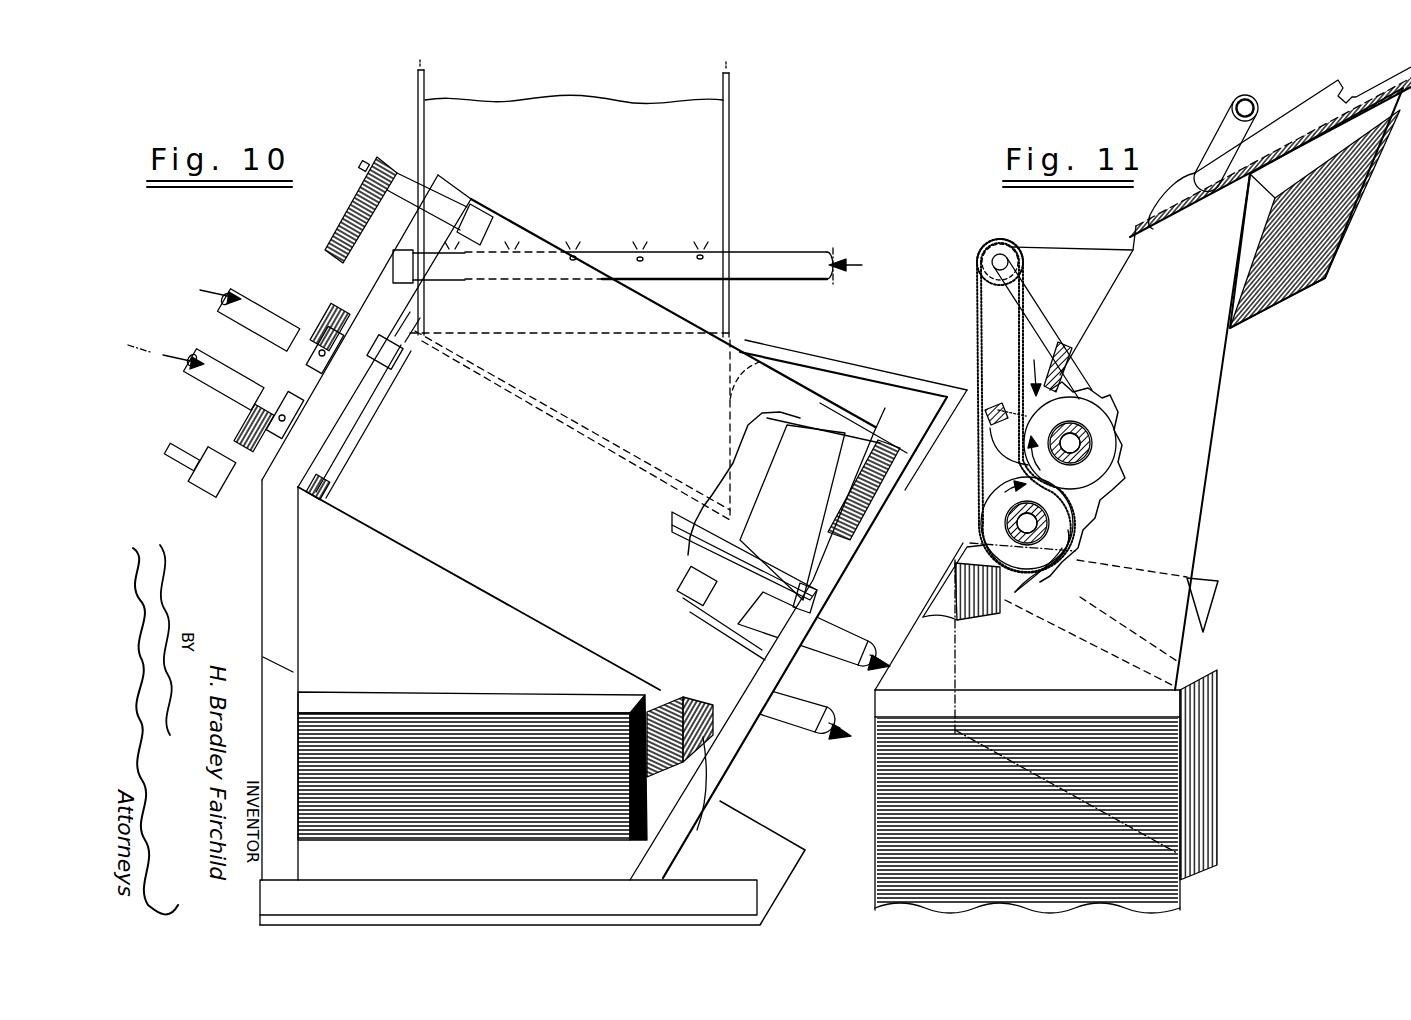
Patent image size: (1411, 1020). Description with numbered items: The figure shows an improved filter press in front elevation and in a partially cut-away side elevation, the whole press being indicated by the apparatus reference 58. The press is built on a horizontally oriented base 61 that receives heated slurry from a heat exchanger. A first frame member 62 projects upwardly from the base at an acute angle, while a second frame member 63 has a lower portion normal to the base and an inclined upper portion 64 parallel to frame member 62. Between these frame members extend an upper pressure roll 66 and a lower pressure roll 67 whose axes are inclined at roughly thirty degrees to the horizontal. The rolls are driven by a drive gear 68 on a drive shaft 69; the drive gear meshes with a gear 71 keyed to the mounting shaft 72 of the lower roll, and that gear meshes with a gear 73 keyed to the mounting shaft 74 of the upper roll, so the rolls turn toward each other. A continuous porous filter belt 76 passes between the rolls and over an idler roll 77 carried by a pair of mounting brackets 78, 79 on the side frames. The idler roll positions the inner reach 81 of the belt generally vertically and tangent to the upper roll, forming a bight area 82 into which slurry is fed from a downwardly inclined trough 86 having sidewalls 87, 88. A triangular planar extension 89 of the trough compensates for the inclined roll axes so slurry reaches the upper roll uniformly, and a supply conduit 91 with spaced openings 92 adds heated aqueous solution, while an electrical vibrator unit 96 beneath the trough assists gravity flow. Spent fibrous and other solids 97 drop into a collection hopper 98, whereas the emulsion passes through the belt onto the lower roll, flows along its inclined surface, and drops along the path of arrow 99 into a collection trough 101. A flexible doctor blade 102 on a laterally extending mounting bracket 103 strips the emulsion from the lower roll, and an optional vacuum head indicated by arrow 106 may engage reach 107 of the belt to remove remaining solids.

In FIG. 10, the sheet feeding apparatus 58 is at (258, 234).
In FIG. 11, the sheet feeding apparatus 58 is at (1240, 404).
In FIG. 10, the base 61 is at (488, 898).
In FIG. 11, the base 61 is at (900, 790).
In FIG. 10, the first frame member 62 is at (727, 758).
In FIG. 11, the first frame member 62 is at (1184, 309).
In FIG. 10, the second frame member 63 is at (292, 633).
In FIG. 10, the inclined upper portion 64 is at (362, 300).
In FIG. 10, the upper pressure roll 66 is at (376, 388).
In FIG. 11, the upper pressure roll 66 is at (1096, 406).
In FIG. 10, the lower pressure roll 67 is at (313, 497).
In FIG. 11, the lower pressure roll 67 is at (1066, 520).
In FIG. 10, the drive gear 68 is at (205, 505).
In FIG. 10, the drive shaft 69 is at (180, 466).
In FIG. 10, the gear 71 is at (232, 438).
In FIG. 10, the mounting shaft 72 is at (205, 360).
In FIG. 11, the mounting shaft 72 is at (1052, 562).
In FIG. 10, the gear 73 is at (312, 305).
In FIG. 10, the mounting shaft 74 is at (246, 291).
In FIG. 11, the mounting shaft 74 is at (1084, 443).
In FIG. 10, the porous filter belt 76 is at (521, 489).
In FIG. 11, the porous filter belt 76 is at (966, 336).
In FIG. 10, the idler roll 77 is at (788, 428).
In FIG. 11, the idler roll 77 is at (976, 282).
In FIG. 10, the mounting bracket 78 is at (872, 515).
In FIG. 10, the mounting bracket 79 is at (343, 214).
In FIG. 11, the inner reach 81 is at (1028, 318).
In FIG. 11, the bight area 82 is at (1048, 365).
In FIG. 10, the trough 86 is at (680, 167).
In FIG. 10, the sidewall 87 is at (425, 86).
In FIG. 10, the sidewall 88 is at (722, 82).
In FIG. 10, the triangular planar extension 89 is at (772, 362).
In FIG. 11, the triangular planar extension 89 is at (1142, 214).
In FIG. 10, the supply conduit 91 is at (762, 258).
In FIG. 11, the supply conduit 91 is at (1222, 145).
In FIG. 10, the spaced openings 92 is at (642, 250).
In FIG. 11, the electrical vibrator unit 96 is at (1325, 262).
In FIG. 11, the spent fibrous and other solids 97 is at (1105, 603).
In FIG. 10, the collection hopper 98 is at (548, 812).
In FIG. 11, the collection hopper 98 is at (1215, 745).
In FIG. 10, the arrow 99 is at (690, 690).
In FIG. 10, the collection trough 101 is at (697, 826).
In FIG. 11, the collection trough 101 is at (1212, 600).
In FIG. 10, the doctor blade 102 is at (708, 571).
In FIG. 11, the doctor blade 102 is at (976, 488).
In FIG. 10, the mounting bracket 103 is at (768, 578).
In FIG. 11, the mounting bracket 103 is at (995, 405).
In FIG. 11, the arrow 106 is at (968, 220).
In FIG. 11, the reach 107 is at (976, 308).